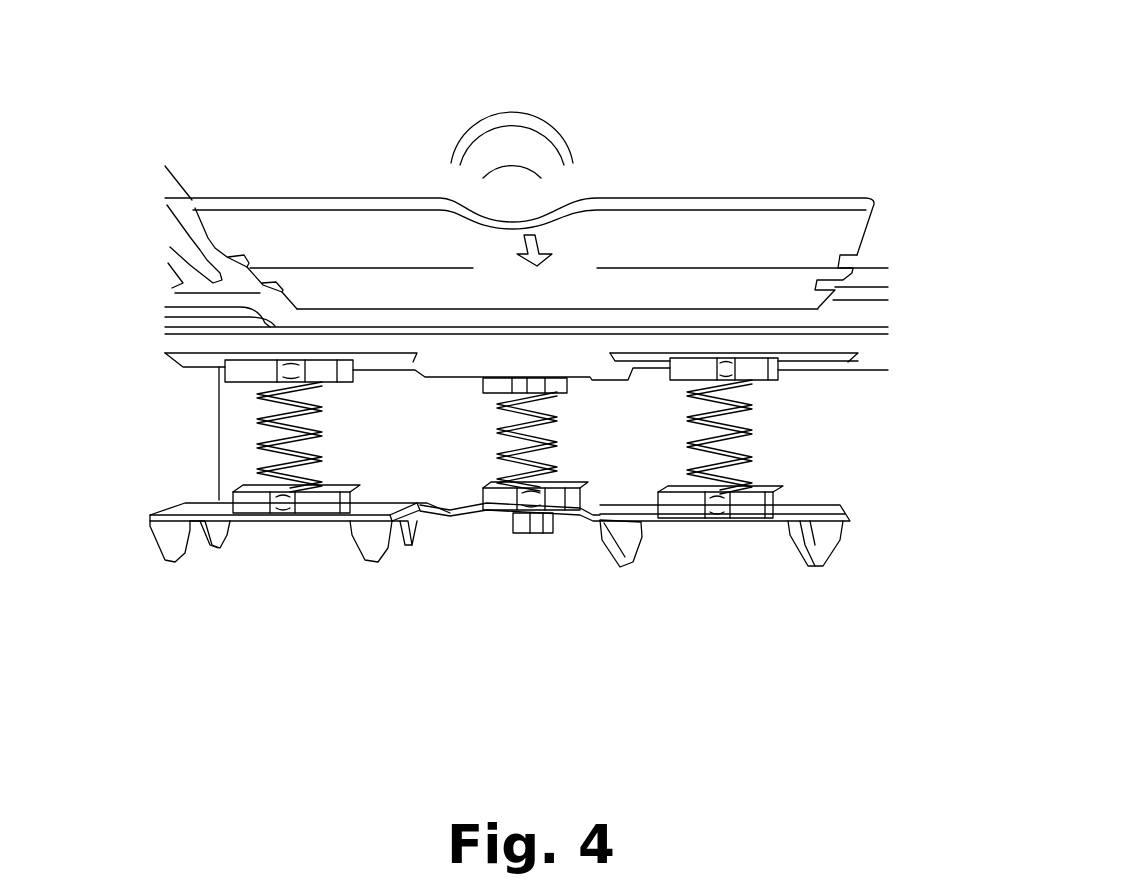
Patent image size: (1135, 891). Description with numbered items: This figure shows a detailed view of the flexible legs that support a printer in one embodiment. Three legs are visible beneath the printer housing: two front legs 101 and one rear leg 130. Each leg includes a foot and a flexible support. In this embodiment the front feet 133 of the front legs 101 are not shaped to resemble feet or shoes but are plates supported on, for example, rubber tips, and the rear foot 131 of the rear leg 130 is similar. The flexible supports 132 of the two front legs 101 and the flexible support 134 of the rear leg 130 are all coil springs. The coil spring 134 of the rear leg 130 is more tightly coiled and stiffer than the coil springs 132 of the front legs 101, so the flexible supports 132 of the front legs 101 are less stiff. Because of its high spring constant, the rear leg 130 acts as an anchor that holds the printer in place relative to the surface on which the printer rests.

The front leg 101 is at (275, 552).
The rear leg 130 is at (471, 313).
The rear foot 131 is at (538, 507).
The flexible support of front leg 132 is at (278, 410).
The front foot 133 is at (250, 503).
The flexible support of rear leg 134 is at (598, 507).